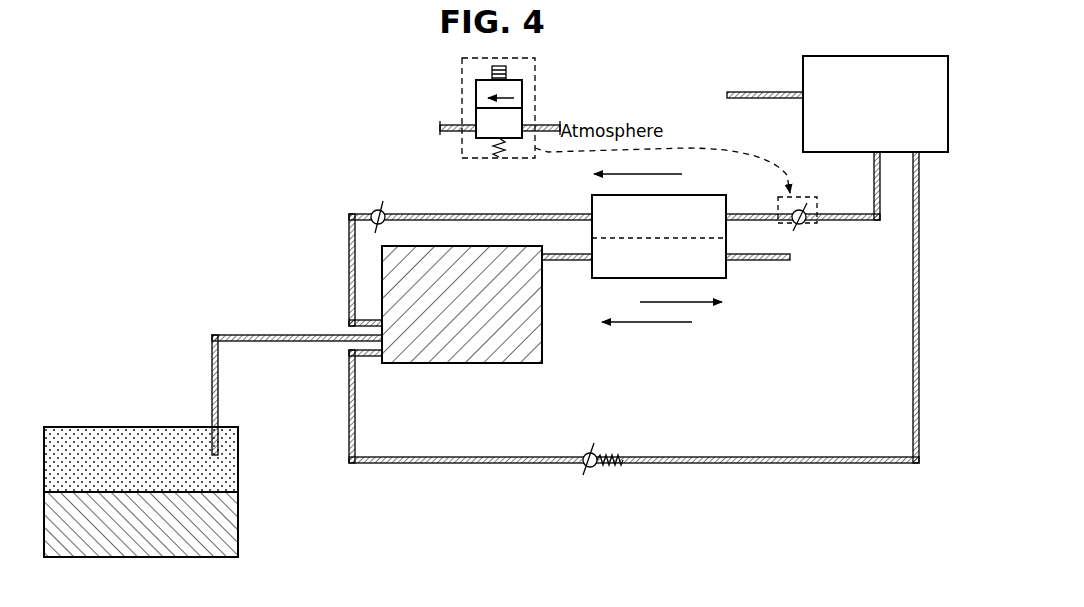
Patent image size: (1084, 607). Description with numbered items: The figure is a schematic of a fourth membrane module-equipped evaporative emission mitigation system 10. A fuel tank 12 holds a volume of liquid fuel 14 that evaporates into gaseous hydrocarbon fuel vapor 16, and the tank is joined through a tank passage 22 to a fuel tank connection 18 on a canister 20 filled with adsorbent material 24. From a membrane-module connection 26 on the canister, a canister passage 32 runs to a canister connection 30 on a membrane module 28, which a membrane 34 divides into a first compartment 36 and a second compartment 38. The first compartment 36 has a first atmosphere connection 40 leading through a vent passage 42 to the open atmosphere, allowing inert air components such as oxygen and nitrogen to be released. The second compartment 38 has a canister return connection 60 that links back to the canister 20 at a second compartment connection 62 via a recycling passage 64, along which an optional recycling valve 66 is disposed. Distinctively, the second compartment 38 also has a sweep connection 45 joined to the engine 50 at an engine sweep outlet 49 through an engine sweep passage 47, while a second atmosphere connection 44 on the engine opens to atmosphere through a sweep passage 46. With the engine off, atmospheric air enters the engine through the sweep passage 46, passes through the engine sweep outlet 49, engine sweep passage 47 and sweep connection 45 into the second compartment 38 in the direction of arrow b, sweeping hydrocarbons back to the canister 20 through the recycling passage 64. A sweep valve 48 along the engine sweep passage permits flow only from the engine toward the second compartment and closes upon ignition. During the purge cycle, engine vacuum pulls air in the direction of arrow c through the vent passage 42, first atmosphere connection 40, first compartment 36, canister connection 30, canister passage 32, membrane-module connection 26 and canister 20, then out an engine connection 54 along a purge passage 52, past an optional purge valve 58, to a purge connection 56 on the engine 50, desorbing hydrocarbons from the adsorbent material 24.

The evaporative emission mitigation system 10 is at (266, 146).
The fuel tank 12 is at (244, 519).
The liquid fuel 14 is at (147, 546).
The gaseous hydrocarbon fuel vapor 16 is at (138, 443).
The fuel tank connection 18 is at (398, 336).
The canister 20 is at (549, 365).
The tank passage 22 is at (259, 335).
The adsorbent material 24 is at (470, 330).
The membrane-module connection 26 is at (525, 257).
The membrane module 28 is at (730, 284).
The canister connection 30 is at (603, 261).
The canister passage 32 is at (560, 256).
The membrane 34 is at (683, 237).
The first compartment 36 is at (611, 271).
The second compartment 38 is at (700, 206).
The first atmosphere connection 40 is at (712, 259).
The vent passage 42 is at (786, 262).
The second atmosphere connection 44 is at (805, 95).
The sweep connection 45 is at (722, 213).
The sweep passage 46 is at (750, 92).
The engine sweep passage 47 is at (874, 206).
The sweep valve 48 is at (798, 208).
The engine sweep outlet 49 is at (872, 153).
The engine 50 is at (887, 51).
The purge passage 52 is at (741, 463).
The engine connection 54 is at (440, 127).
The purge connection 56 is at (922, 151).
The purge valve 58 is at (594, 470).
The canister return connection 60 is at (603, 213).
The second compartment connection 62 is at (392, 310).
The recycling passage 64 is at (440, 214).
The recycling valve 66 is at (375, 208).